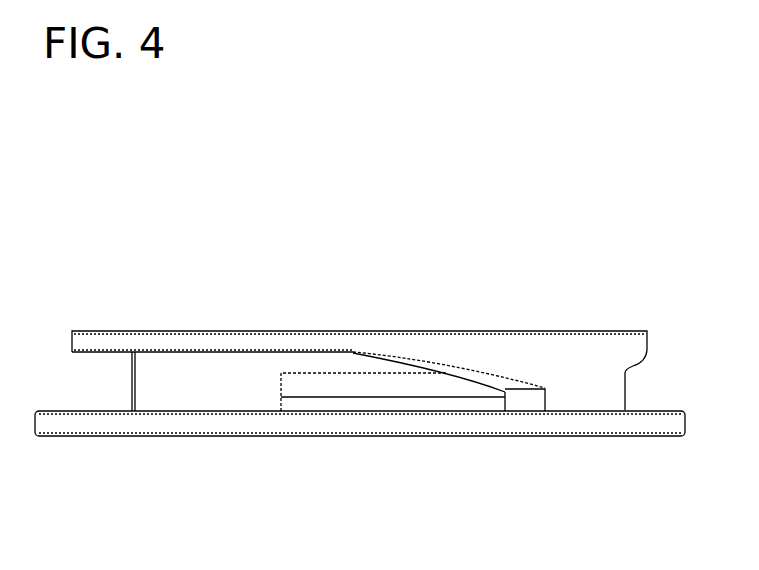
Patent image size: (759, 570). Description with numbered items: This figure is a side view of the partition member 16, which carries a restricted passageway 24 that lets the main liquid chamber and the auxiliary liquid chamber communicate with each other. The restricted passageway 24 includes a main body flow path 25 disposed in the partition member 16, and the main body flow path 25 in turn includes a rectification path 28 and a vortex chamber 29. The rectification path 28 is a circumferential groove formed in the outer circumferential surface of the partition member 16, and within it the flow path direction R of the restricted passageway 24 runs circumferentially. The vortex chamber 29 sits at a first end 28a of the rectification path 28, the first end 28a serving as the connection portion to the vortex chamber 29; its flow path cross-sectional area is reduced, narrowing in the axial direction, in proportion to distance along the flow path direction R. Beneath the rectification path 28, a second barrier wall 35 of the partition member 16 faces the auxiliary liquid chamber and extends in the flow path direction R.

The partition member 16 is at (569, 204).
The restricted passageway 24 is at (222, 368).
The main body flow path 25 is at (258, 396).
The rectification path 28 is at (112, 388).
The first end 28a is at (395, 365).
The vortex chamber 29 is at (453, 403).
The second barrier wall 35 is at (340, 434).
The flow path direction R is at (152, 383).